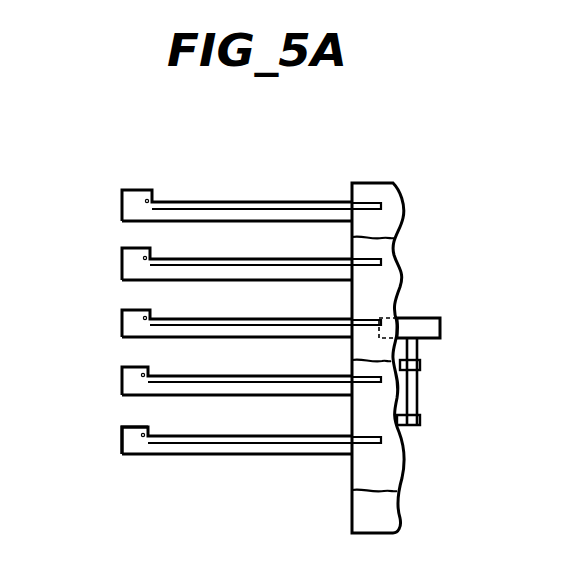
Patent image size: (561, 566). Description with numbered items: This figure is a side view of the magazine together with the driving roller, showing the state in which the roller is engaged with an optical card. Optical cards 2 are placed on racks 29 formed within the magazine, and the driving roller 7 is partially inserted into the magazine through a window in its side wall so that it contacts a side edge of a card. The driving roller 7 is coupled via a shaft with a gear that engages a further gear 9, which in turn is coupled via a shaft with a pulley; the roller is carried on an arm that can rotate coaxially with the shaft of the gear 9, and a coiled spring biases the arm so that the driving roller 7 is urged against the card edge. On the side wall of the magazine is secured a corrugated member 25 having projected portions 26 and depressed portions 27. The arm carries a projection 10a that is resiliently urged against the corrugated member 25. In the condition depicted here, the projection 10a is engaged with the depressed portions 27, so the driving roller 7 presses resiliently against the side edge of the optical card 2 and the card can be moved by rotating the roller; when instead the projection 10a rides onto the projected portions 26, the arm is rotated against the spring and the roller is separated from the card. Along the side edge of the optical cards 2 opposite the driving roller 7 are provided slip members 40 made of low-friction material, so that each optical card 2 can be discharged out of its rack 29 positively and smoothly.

The optical card 2 is at (219, 202).
The rack 29 is at (286, 209).
The corrugated member 25 is at (383, 192).
The projected portion 26 is at (405, 270).
The depressed portion 27 is at (401, 300).
The driving roller 7 is at (442, 326).
The gear 9 is at (421, 365).
The projection 10a is at (421, 418).
The slip member 40 is at (138, 431).